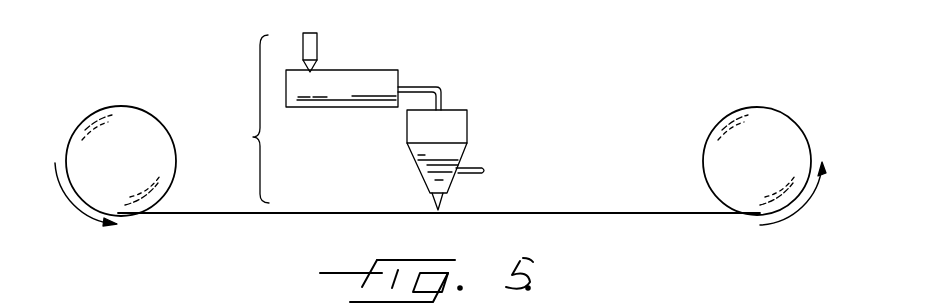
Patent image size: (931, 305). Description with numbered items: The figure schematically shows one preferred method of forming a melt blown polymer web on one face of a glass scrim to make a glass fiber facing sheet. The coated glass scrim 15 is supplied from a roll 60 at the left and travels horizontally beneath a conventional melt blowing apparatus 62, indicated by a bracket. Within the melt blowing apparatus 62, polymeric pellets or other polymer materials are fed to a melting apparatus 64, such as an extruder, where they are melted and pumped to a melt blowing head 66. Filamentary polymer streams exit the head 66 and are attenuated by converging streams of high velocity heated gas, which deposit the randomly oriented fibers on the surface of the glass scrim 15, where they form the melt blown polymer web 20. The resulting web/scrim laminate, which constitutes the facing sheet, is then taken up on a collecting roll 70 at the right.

The glass scrim 15 is at (203, 214).
The melt blown polymer web 20 is at (575, 213).
The roll 60 is at (125, 122).
The melt blowing apparatus 62 is at (241, 119).
The melting apparatus 64 is at (353, 85).
The melt blowing heads 66 is at (450, 160).
The collecting roll 70 is at (782, 128).